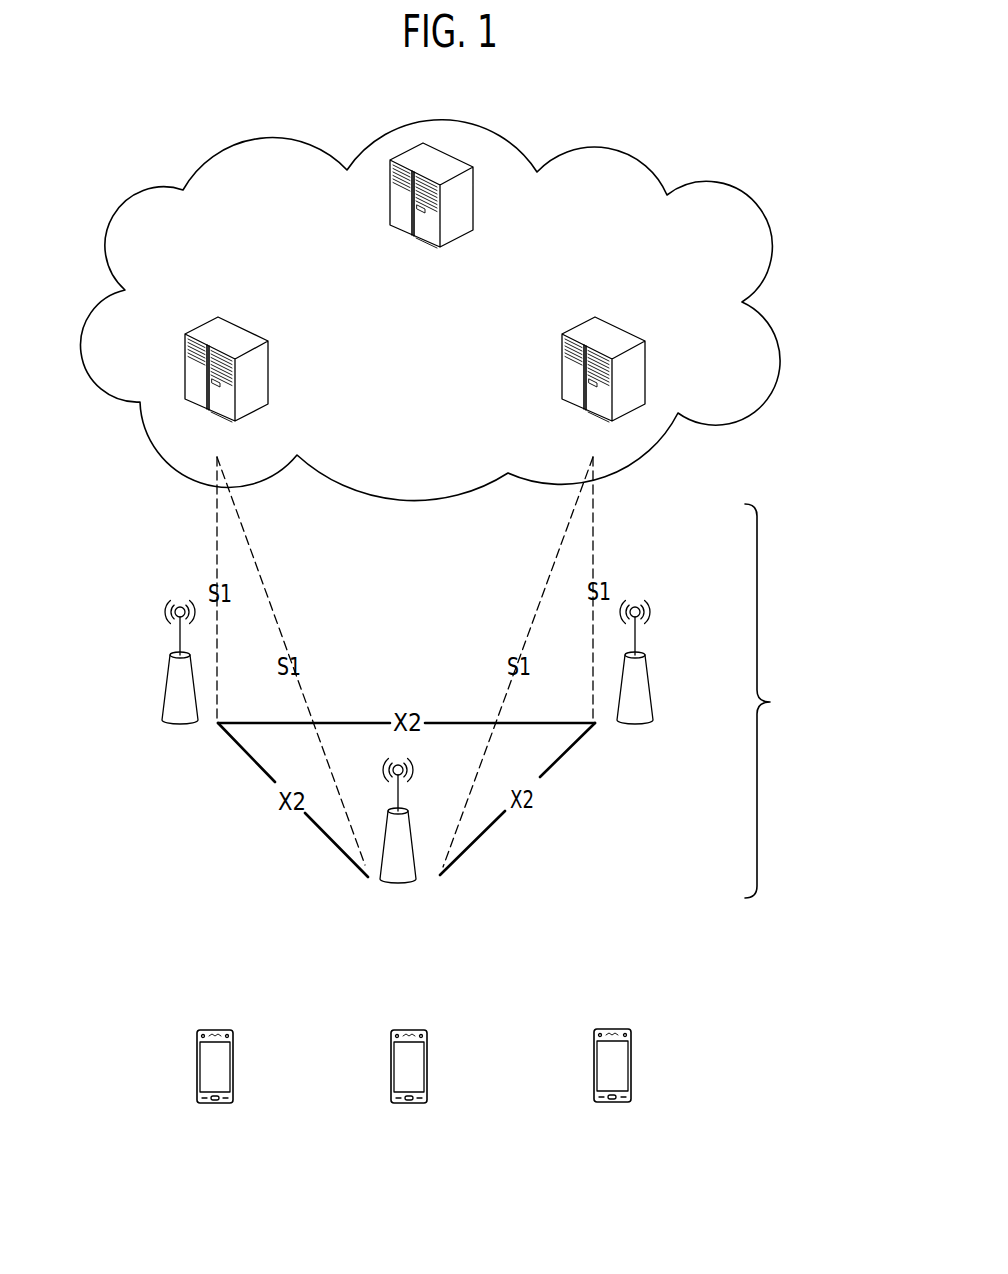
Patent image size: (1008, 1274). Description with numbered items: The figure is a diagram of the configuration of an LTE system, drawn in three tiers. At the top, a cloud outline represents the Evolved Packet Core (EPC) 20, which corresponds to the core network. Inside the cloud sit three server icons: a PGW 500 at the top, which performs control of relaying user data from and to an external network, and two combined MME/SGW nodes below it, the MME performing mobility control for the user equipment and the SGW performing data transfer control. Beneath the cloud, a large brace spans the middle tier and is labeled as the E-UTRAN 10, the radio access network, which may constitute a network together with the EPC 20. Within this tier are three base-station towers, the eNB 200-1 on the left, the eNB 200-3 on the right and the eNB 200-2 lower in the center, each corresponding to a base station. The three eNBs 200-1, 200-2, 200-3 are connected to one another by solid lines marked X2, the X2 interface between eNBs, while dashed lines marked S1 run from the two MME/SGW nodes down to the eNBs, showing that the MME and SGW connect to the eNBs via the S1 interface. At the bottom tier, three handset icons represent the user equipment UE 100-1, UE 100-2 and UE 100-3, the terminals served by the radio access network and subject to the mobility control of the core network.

The Evolved Packet Core (EPC) 20 is at (645, 160).
The PGW (Packet Data Network Gateway) 500 is at (440, 150).
The eNB (evolved Node-B) 200-1 is at (165, 688).
The eNB (evolved Node-B) 200-2 is at (417, 857).
The eNB (evolved Node-B) 200-3 is at (648, 668).
The E-UTRAN (Evolved-Universal Terrestrial Radio Access Network) 10 is at (808, 701).
The User Equipment (UE) 100-1 is at (230, 1030).
The User Equipment (UE) 100-2 is at (410, 1030).
The User Equipment (UE) 100-3 is at (618, 1029).